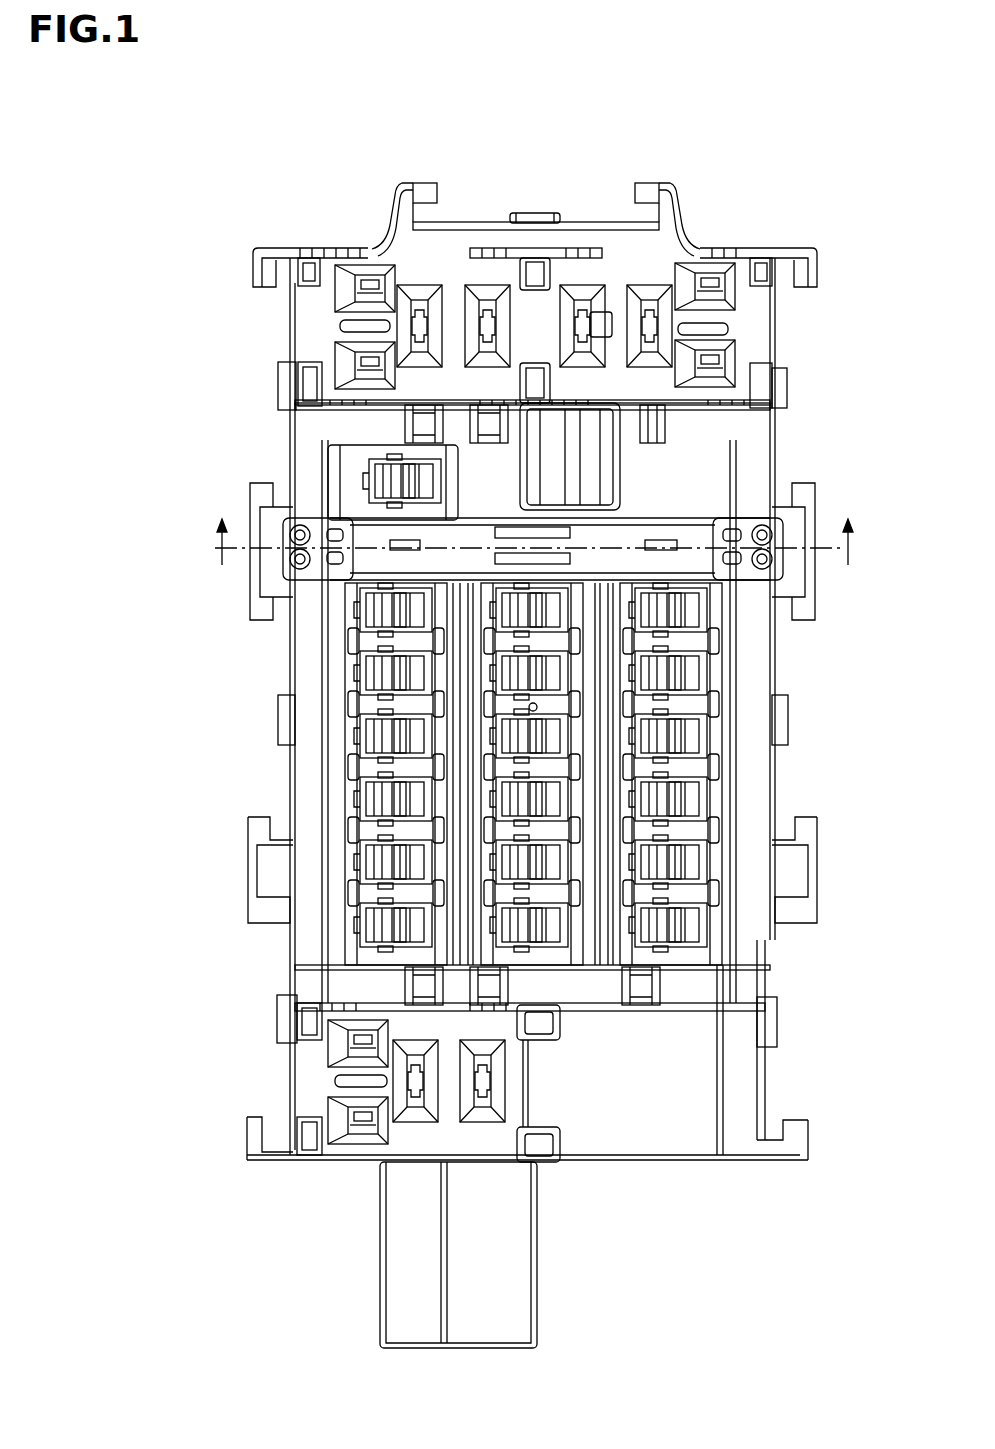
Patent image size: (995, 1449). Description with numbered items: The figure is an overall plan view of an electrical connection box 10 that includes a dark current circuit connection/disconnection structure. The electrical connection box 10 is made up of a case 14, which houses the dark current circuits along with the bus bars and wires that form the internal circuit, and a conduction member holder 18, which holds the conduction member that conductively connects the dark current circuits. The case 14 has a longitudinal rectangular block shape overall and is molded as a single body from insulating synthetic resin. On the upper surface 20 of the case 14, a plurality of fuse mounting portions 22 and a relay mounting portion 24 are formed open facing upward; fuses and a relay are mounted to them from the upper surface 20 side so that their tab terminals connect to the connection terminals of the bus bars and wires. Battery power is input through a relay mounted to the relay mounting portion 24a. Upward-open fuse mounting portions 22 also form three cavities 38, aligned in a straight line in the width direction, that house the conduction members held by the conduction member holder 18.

The electrical connection box 10 is at (540, 115).
The case 14 is at (600, 163).
The conduction member holder 18 is at (685, 500).
The upper surface 20 is at (313, 803).
The fuse mounting portion 22 is at (428, 607).
The relay mounting portion 24 is at (760, 303).
The relay mounting portion 24a is at (302, 303).
The cavity 38 is at (517, 689).